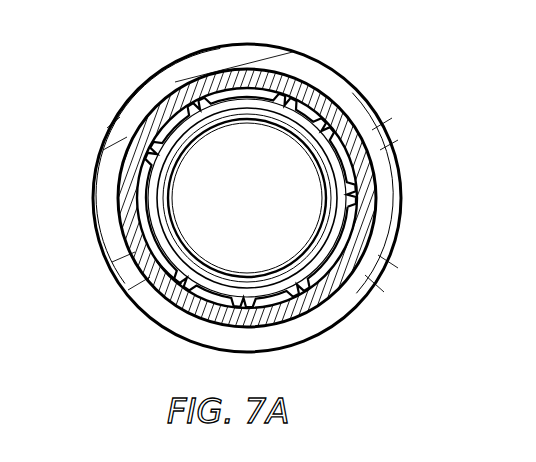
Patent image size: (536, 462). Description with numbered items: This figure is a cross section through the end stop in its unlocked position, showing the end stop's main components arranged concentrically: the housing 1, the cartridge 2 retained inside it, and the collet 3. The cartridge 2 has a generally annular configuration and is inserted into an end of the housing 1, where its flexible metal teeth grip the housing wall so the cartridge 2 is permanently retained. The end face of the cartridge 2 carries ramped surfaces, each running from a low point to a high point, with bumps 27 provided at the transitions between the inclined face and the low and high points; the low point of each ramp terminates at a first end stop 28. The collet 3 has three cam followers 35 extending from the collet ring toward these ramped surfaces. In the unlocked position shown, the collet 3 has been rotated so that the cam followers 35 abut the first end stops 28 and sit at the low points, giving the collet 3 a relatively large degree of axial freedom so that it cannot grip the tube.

The housing 1 is at (98, 207).
The cartridge 2 is at (372, 192).
The collet 3 is at (305, 112).
The bumps 27 is at (173, 148).
The first end stop 28 is at (223, 292).
The cam followers 35 is at (176, 278).